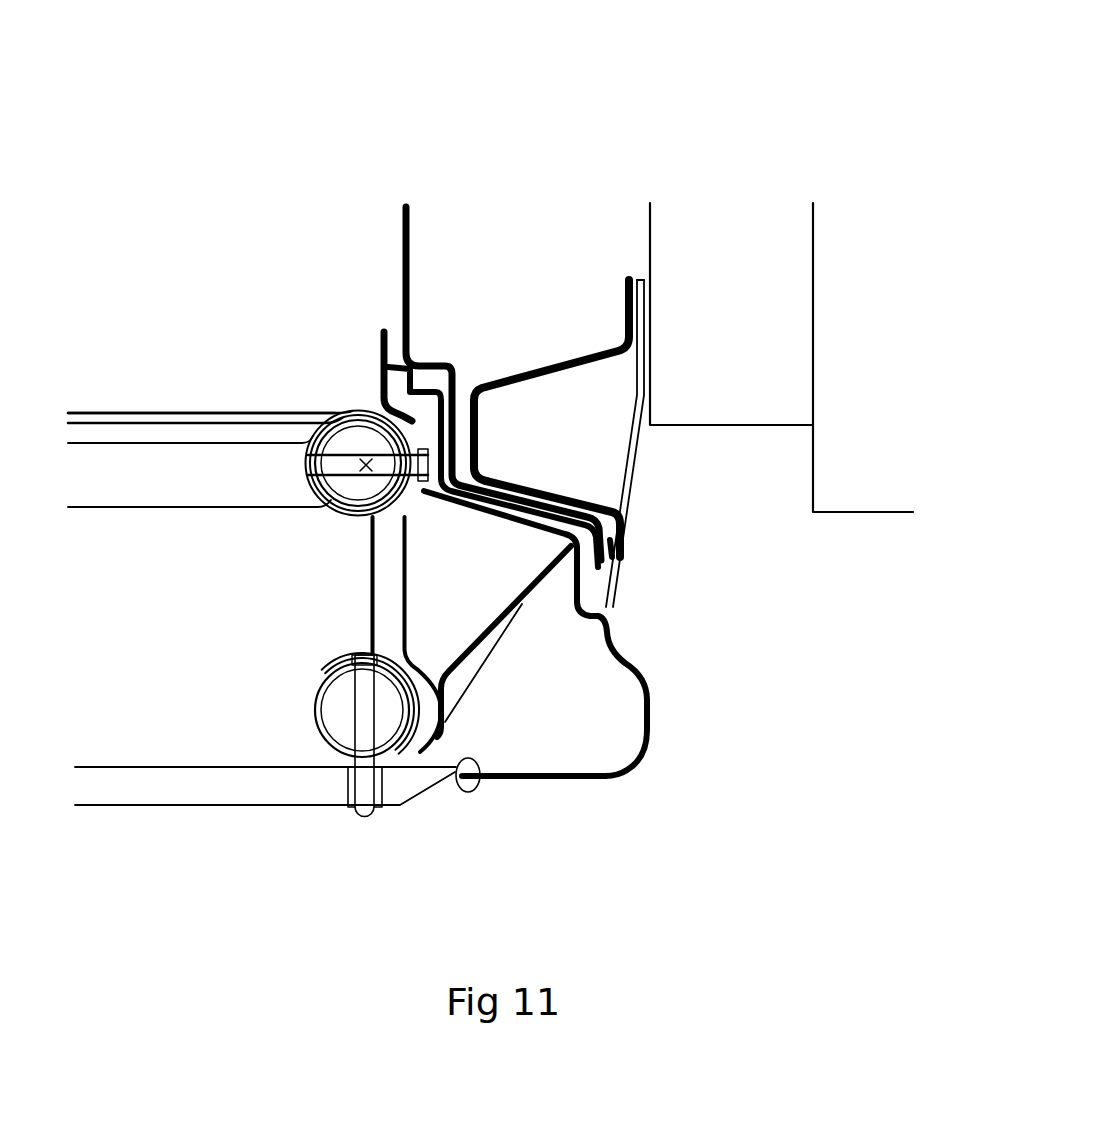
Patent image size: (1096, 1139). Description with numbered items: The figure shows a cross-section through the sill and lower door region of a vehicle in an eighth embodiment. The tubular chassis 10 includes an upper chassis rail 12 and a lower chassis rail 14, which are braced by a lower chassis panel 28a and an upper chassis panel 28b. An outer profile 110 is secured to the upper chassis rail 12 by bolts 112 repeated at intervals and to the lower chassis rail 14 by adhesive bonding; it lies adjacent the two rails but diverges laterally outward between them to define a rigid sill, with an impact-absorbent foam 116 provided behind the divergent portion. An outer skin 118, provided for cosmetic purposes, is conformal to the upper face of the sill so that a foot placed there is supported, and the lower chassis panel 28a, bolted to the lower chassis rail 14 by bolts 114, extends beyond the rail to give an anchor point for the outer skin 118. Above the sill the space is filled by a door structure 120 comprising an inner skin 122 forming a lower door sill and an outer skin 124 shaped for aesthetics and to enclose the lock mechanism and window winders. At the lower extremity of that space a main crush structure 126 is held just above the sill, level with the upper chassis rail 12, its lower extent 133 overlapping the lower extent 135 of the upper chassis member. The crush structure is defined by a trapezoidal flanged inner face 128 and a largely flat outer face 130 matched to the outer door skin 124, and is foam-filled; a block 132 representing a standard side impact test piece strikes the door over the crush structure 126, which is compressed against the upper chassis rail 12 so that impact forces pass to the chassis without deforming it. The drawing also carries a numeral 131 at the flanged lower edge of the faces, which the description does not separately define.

The tubular chassis 10 is at (246, 325).
The upper chassis rail 12 is at (345, 400).
The lower chassis rail 14 is at (327, 672).
The lower chassis panel 28a is at (232, 792).
The upper chassis panel 28b is at (228, 405).
The outer profile 110 is at (458, 683).
The bolts 112 is at (358, 482).
The bolts 114 is at (358, 712).
The impact-absorbent foam 116 is at (490, 573).
The outer skin 118 is at (585, 777).
The door structure 120 is at (531, 228).
The inner skin 122 is at (407, 238).
The outer skin 124 is at (647, 230).
The crush structure 126 is at (567, 345).
The inner face 128 is at (497, 380).
The outer face 130 is at (622, 448).
The flange end 131 is at (640, 520).
The block 132 is at (712, 362).
The lower extent 133 is at (574, 466).
The lower extent 135 is at (361, 400).